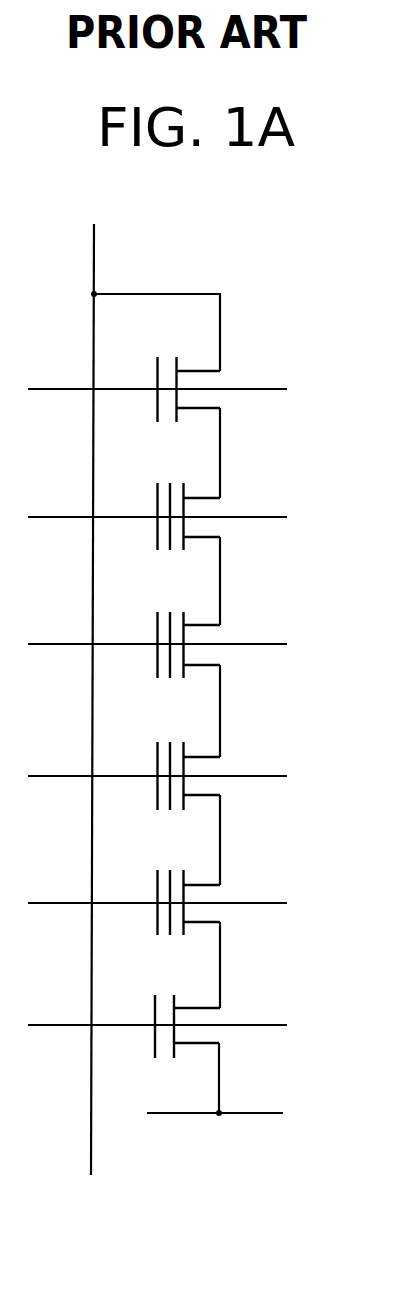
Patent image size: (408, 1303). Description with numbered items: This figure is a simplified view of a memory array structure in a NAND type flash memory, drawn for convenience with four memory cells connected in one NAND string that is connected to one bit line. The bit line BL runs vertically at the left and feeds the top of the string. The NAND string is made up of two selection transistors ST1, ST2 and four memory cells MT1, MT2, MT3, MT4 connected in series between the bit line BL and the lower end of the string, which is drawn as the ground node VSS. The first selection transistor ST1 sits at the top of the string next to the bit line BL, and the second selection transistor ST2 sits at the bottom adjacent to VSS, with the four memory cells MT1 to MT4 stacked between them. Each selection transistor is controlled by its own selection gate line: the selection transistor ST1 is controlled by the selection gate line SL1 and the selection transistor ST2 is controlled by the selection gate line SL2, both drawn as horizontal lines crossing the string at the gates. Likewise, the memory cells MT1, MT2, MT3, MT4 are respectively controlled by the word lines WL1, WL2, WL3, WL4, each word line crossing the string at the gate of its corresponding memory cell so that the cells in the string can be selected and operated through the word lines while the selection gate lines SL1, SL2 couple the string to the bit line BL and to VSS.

The bit line BL is at (72, 699).
The selection transistor ST1 is at (162, 387).
The selection transistor ST2 is at (161, 1025).
The memory cell MT1 is at (159, 515).
The memory cell MT2 is at (159, 643).
The memory cell MT3 is at (159, 776).
The memory cell MT4 is at (159, 901).
The selection gate line SL1 is at (180, 388).
The selection gate line SL2 is at (180, 1027).
The word line WL1 is at (185, 517).
The word line WL2 is at (185, 645).
The word line WL3 is at (185, 777).
The word line WL4 is at (185, 903).
The ground potential line VSS is at (215, 1132).